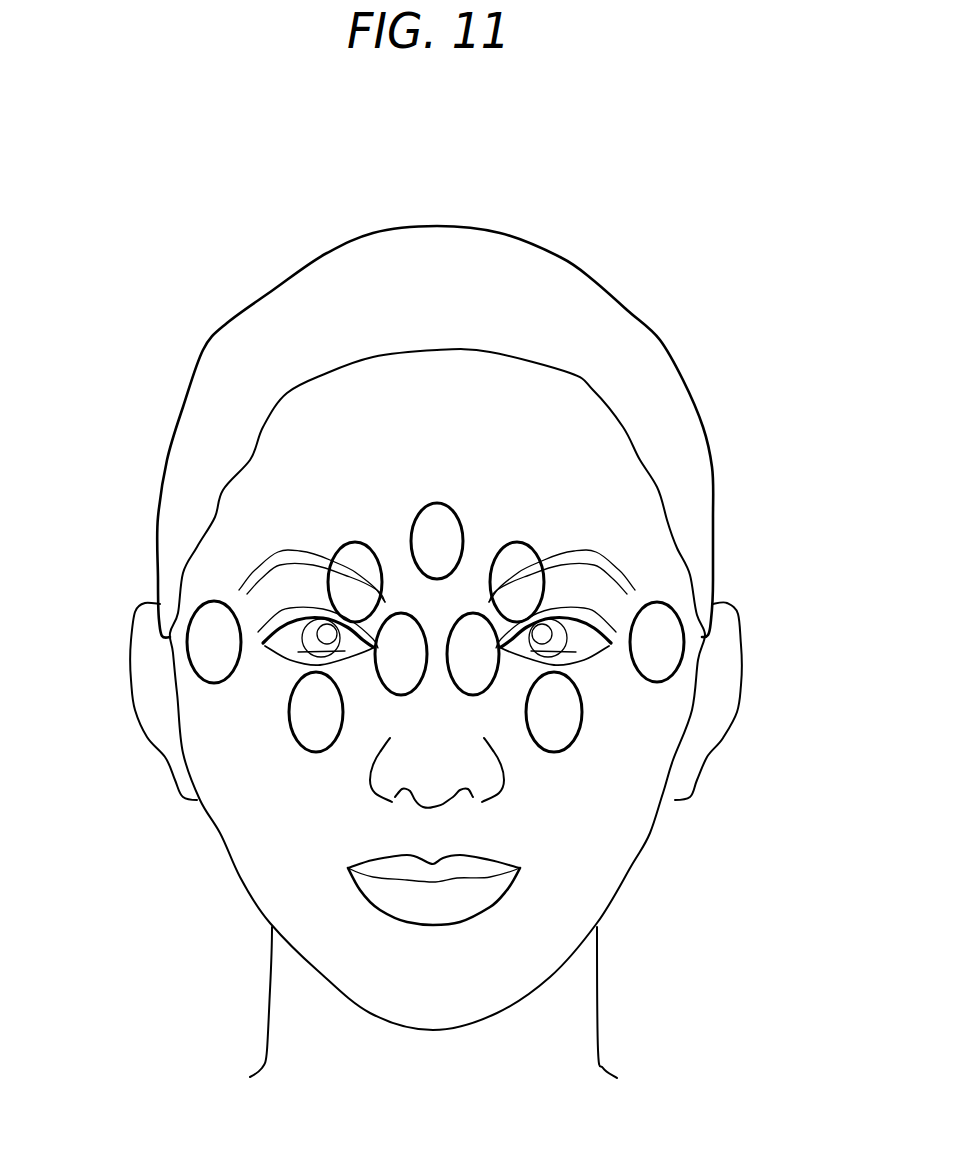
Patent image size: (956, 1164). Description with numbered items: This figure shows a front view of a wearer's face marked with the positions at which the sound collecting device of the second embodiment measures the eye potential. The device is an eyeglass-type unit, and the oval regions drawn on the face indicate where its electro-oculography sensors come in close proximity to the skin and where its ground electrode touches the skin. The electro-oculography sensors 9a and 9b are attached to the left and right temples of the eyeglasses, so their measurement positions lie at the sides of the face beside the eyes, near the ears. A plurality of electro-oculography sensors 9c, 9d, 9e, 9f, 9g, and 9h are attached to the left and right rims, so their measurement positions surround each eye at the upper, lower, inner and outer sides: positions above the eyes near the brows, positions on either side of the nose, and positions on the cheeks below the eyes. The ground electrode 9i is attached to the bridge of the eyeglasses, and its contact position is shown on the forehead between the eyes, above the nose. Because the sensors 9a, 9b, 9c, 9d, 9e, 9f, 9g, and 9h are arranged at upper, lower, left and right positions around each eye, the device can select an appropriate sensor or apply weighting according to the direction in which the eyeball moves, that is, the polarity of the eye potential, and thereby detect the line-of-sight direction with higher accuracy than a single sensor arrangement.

The electro-oculography sensor 9a is at (684, 642).
The electro-oculography sensor 9b is at (187, 645).
The electro-oculography sensor 9c is at (524, 543).
The electro-oculography sensor 9d is at (584, 713).
The electro-oculography sensor 9e is at (498, 632).
The electro-oculography sensor 9f is at (376, 632).
The electro-oculography sensor 9g is at (343, 545).
The electro-oculography sensor 9h is at (288, 713).
The ground electrode 9i is at (437, 503).